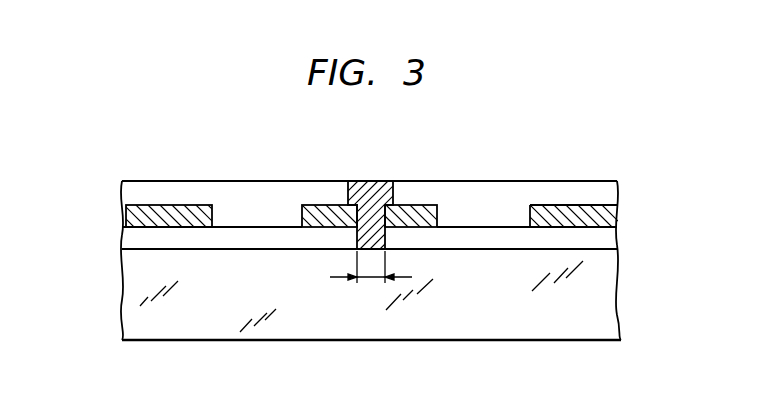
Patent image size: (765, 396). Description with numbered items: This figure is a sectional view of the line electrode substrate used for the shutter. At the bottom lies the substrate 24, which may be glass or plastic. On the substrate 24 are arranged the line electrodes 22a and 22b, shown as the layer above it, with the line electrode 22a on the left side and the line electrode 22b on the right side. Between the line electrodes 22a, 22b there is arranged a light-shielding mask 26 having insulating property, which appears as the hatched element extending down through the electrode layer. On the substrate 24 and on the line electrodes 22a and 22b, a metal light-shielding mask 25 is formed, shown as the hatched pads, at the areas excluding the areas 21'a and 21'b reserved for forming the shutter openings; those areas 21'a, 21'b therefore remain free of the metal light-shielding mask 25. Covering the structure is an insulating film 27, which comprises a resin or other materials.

The substrate 24 is at (605, 313).
The metal light-shielding mask 25 is at (127, 212).
The light-shielding mask having insulating property 26 is at (373, 190).
The insulating film 27 is at (608, 195).
The area for forming shutter opening 21'a is at (260, 186).
The area for forming shutter opening 21'b is at (483, 186).
The line electrode 22a is at (243, 240).
The line electrode 22b is at (505, 240).